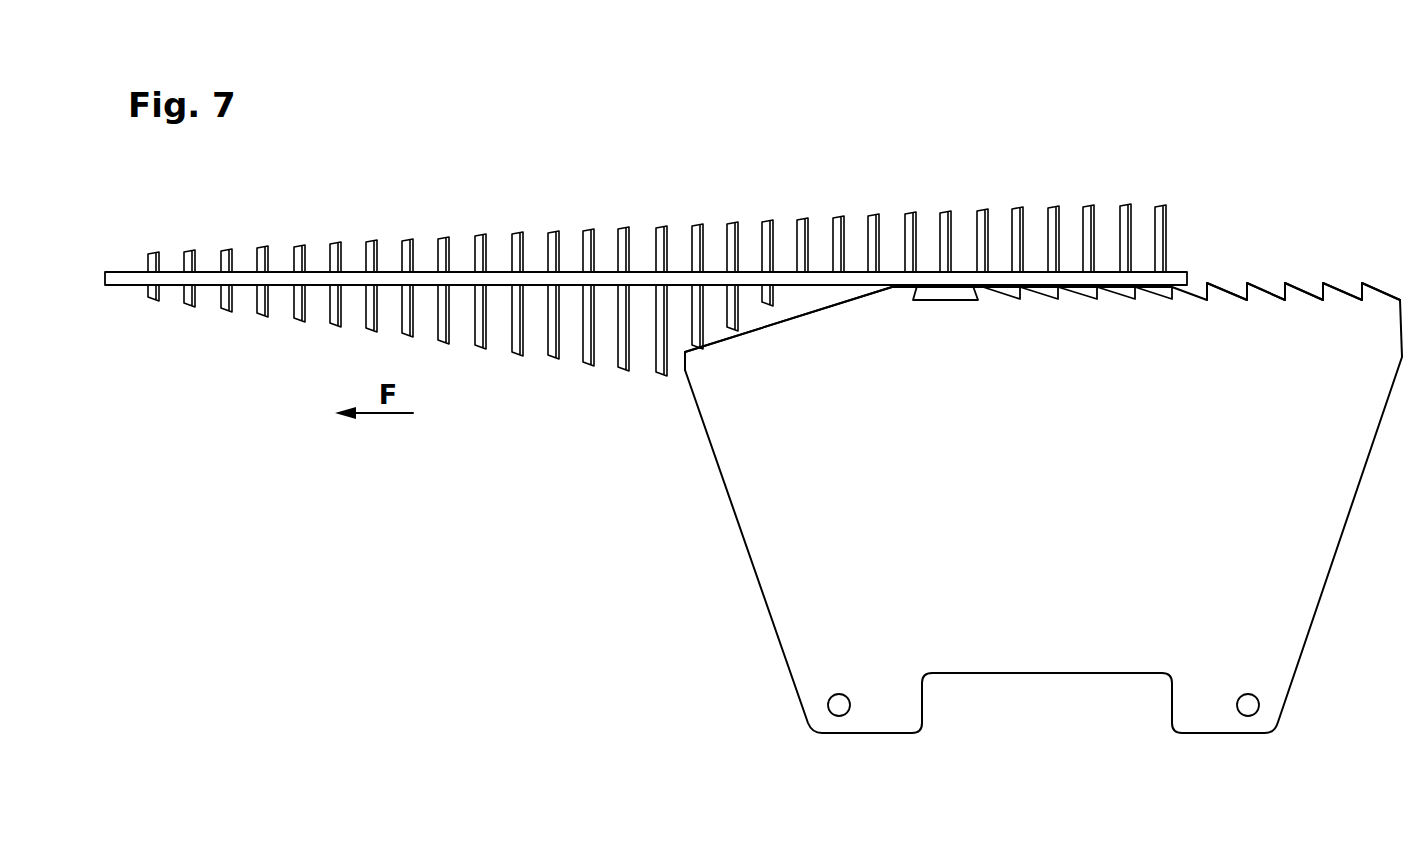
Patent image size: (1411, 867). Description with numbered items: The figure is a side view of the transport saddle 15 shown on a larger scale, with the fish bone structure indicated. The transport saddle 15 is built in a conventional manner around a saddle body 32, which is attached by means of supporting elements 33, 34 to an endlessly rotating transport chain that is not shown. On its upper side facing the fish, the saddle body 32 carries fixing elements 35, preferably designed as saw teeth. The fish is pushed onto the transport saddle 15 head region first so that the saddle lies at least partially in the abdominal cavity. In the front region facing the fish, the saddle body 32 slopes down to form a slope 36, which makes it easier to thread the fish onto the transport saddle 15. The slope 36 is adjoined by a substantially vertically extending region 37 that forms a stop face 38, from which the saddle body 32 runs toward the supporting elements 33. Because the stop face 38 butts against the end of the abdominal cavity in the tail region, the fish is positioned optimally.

The transport saddle 15 is at (682, 590).
The saddle body 32 is at (1065, 473).
The supporting element 33 is at (885, 703).
The supporting element 34 is at (1220, 703).
The fixing elements 35 is at (1218, 292).
The slope 36 is at (758, 327).
The substantially vertically extending region 37 is at (666, 362).
The stop face 38 is at (683, 368).